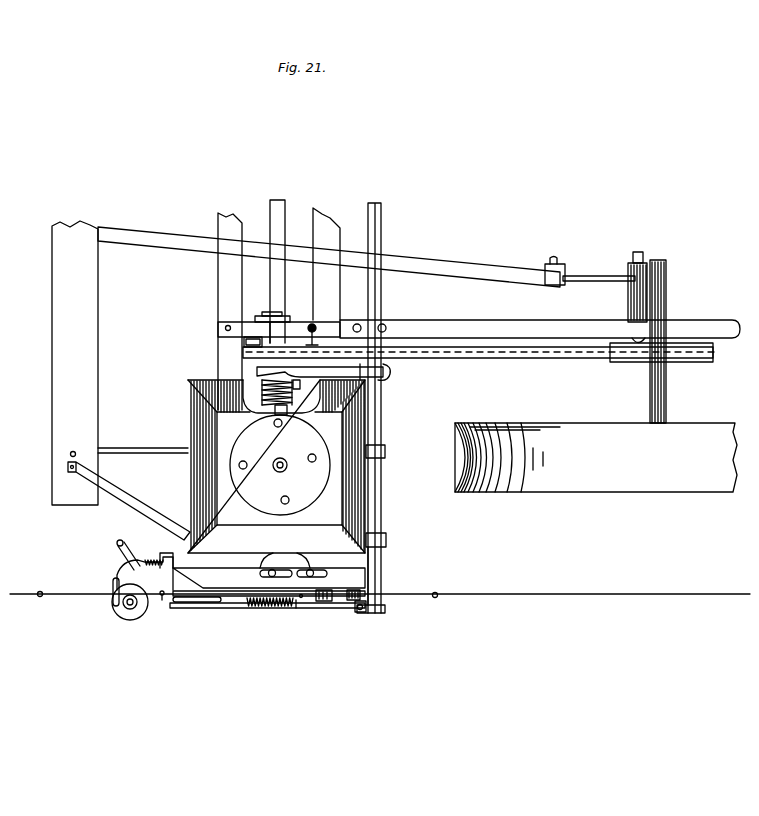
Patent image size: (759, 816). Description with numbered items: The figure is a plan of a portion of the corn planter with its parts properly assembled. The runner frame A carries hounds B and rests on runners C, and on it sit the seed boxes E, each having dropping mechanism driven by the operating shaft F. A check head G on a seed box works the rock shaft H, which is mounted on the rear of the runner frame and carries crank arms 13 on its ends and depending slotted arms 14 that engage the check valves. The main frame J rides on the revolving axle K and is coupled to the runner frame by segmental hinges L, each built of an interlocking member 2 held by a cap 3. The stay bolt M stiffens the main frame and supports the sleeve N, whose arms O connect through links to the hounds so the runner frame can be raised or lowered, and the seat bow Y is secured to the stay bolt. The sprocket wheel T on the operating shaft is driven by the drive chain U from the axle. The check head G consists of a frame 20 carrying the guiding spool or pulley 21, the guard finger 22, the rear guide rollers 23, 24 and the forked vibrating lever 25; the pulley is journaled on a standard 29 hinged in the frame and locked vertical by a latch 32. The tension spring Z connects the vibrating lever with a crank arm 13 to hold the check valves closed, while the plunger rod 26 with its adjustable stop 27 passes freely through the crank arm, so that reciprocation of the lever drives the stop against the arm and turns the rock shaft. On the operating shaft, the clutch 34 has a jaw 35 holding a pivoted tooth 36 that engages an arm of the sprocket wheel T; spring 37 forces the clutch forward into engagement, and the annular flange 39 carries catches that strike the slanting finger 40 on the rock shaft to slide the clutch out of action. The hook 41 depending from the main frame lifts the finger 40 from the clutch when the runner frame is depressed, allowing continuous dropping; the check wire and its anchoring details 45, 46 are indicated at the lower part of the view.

The runner frame A is at (196, 356).
The hounds B is at (496, 268).
The runners C is at (154, 452).
The seed boxes E is at (276, 466).
The operating shaft F is at (273, 292).
The check heads G is at (298, 600).
The rock shaft H is at (382, 232).
The main frame J is at (434, 328).
The axle K is at (666, 397).
The segmental hinges L is at (258, 325).
The stay bolt M is at (633, 255).
The sleeve N is at (628, 300).
The arms O is at (602, 282).
The sprocket wheel T is at (243, 352).
The drive chain U is at (554, 354).
The seat bow Y is at (272, 322).
The tension spring Z is at (270, 607).
The interlocking member 2 is at (217, 321).
The cap 3 is at (244, 343).
The crank arms 13 is at (375, 563).
The slotted arms 14 is at (285, 561).
The frame 20 is at (262, 570).
The guiding spool or pulley 21 is at (132, 602).
The guard finger 22 is at (112, 602).
The rear guide roller 23 is at (322, 602).
The rear guide roller 24 is at (360, 594).
The forked vibrating lever 25 is at (208, 602).
The plunger rod 26 is at (344, 608).
The adjustable stop 27 is at (360, 613).
The standard 29 is at (124, 607).
The latch 32 is at (118, 552).
The clutch 34 is at (313, 369).
The jaw 35 is at (305, 383).
The tooth 36 is at (268, 392).
The spring 37 is at (288, 396).
The annular flange 39 is at (154, 553).
The finger 40 is at (384, 375).
The hook 41 is at (327, 358).
The pin 45 is at (162, 600).
The wire 46 is at (452, 597).